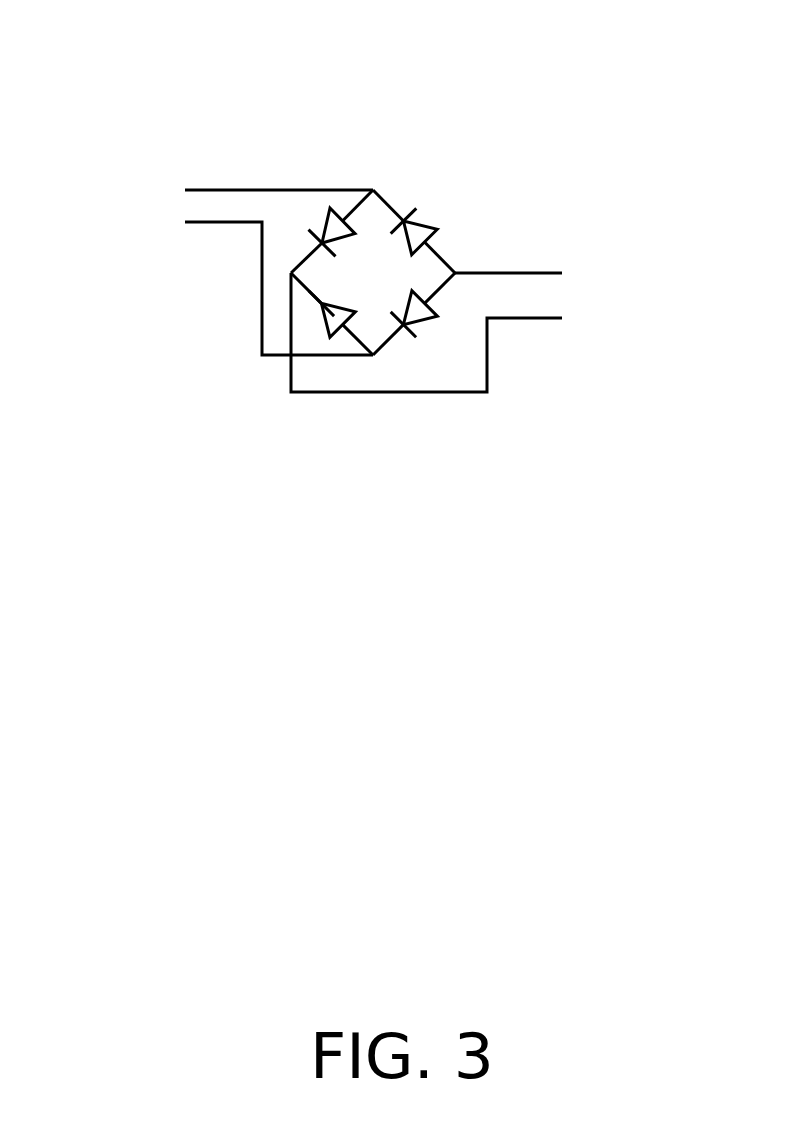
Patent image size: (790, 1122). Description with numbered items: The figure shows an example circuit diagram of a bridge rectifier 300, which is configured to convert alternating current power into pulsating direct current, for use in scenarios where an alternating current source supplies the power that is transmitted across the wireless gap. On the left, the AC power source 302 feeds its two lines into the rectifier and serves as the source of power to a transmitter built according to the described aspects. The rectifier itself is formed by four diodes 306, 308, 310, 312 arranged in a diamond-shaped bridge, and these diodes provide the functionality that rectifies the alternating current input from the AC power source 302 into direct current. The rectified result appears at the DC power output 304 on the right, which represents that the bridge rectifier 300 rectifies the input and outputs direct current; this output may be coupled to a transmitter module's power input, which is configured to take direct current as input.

The bridge rectifier circuit diagram 300 is at (463, 82).
The AC power source 302 is at (202, 265).
The DC power output 304 is at (499, 328).
The diode 306 is at (331, 228).
The diode 308 is at (414, 230).
The diode 310 is at (340, 315).
The diode 312 is at (417, 307).